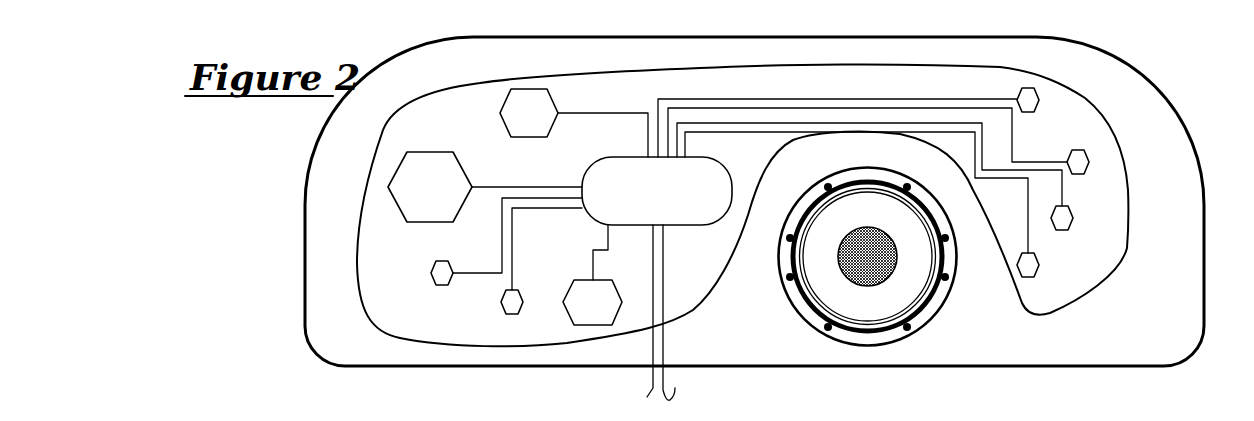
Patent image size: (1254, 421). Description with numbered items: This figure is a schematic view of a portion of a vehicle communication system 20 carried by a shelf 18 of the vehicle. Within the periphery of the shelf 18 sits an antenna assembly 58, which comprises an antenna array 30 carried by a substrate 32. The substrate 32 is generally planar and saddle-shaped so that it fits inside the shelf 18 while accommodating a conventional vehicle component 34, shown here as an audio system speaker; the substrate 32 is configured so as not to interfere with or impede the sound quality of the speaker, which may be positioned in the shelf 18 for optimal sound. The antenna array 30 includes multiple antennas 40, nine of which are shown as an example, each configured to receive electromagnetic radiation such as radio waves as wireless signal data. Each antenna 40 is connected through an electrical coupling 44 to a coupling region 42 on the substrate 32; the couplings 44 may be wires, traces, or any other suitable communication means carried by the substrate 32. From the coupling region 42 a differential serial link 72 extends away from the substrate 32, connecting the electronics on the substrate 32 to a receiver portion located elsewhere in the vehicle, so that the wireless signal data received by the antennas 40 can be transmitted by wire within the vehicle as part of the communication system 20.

The shelf 18 is at (724, 372).
The vehicle communication system 20 is at (815, 81).
The antenna array 30 is at (692, 270).
The substrate 32 is at (1103, 283).
The vehicle component 34 is at (942, 297).
The antenna 40 is at (419, 197).
The coupling region 42 is at (649, 205).
The electrical coupling 44 is at (618, 112).
The antenna assembly 58 is at (1127, 250).
The differential serial link 72 is at (648, 349).